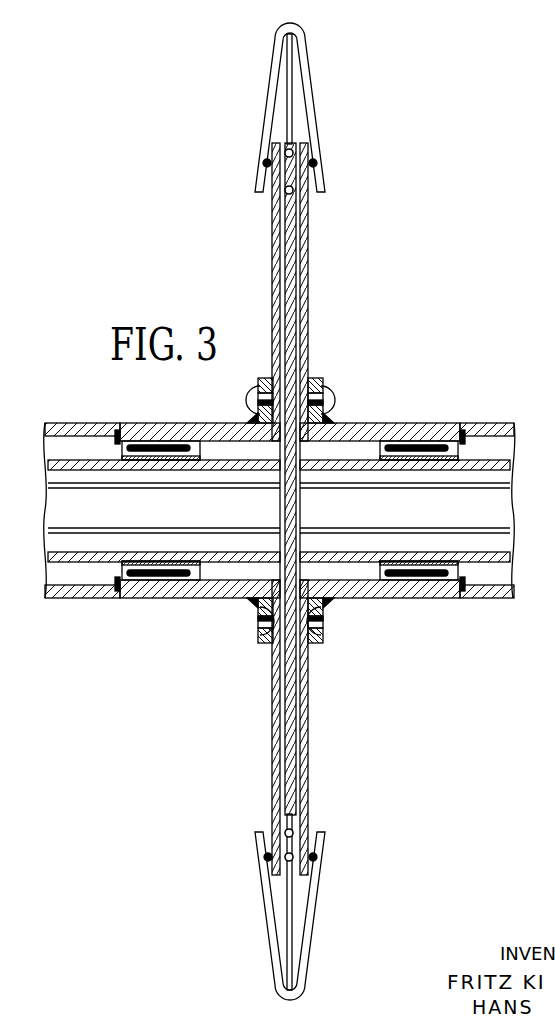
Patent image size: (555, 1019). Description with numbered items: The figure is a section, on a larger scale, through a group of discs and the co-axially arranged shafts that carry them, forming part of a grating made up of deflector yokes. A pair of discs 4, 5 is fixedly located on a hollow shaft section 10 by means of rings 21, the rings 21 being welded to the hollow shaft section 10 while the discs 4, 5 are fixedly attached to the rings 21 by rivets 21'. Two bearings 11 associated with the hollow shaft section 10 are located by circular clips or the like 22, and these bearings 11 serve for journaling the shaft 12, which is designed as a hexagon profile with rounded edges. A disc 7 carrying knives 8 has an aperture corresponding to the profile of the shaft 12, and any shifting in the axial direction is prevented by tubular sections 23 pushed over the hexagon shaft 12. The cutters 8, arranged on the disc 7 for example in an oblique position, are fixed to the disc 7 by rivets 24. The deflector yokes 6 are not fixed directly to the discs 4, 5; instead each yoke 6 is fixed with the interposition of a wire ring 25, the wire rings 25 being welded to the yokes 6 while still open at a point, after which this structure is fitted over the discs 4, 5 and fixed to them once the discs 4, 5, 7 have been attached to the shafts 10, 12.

The disc 4 is at (275, 281).
The disc 5 is at (302, 288).
The deflector yoke 6 is at (312, 100).
The disc carrying knives 7 is at (291, 240).
The knife 8 is at (288, 90).
The hollow shaft section 10 is at (361, 427).
The bearing 11 is at (157, 446).
The shaft 12 is at (490, 507).
The ring 21 is at (291, 497).
The rivet 21' is at (293, 504).
The circular clip 22 is at (463, 432).
The tubular section 23 is at (498, 466).
The rivet 24 is at (293, 153).
The wire ring 25 is at (316, 165).